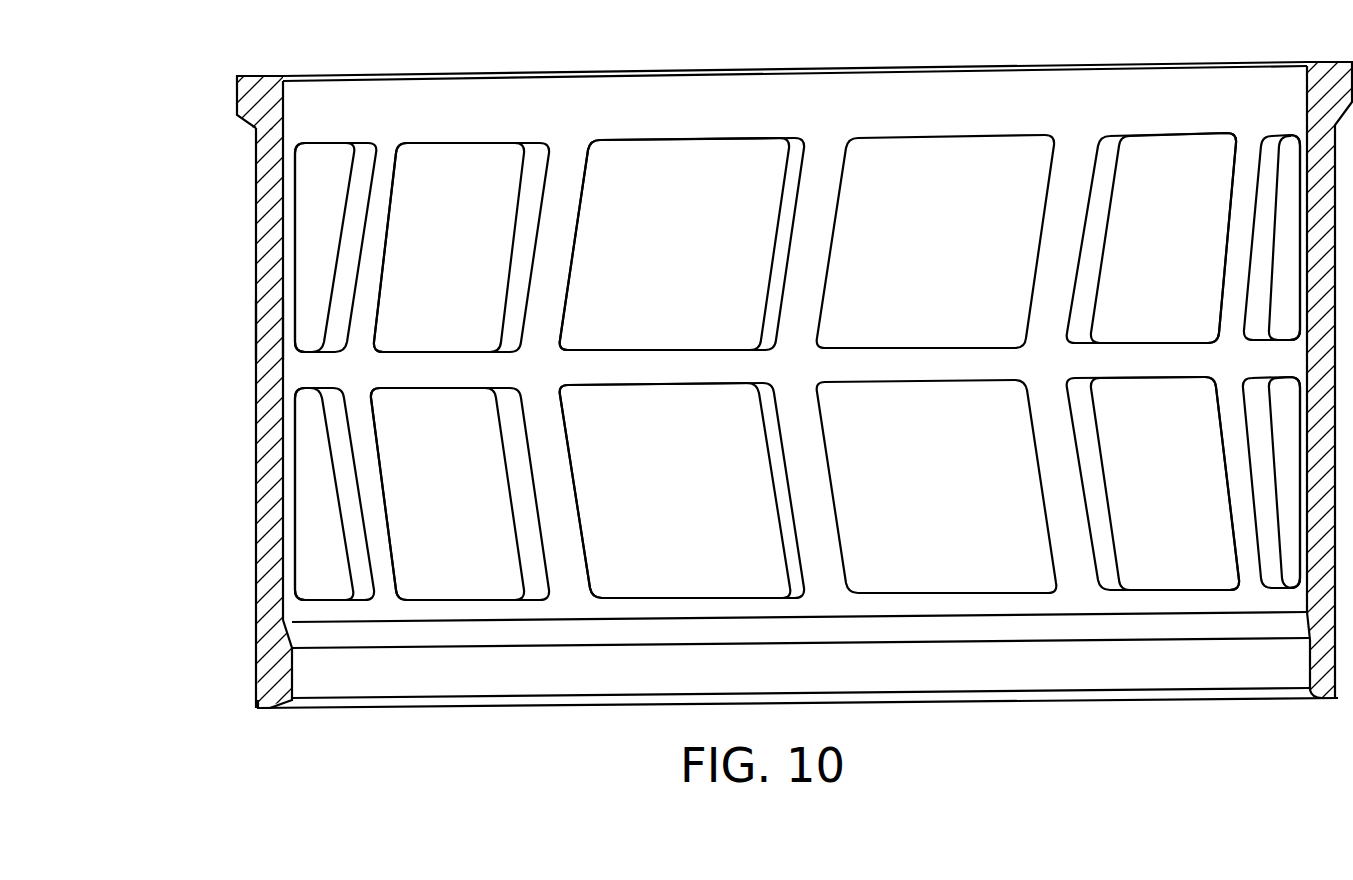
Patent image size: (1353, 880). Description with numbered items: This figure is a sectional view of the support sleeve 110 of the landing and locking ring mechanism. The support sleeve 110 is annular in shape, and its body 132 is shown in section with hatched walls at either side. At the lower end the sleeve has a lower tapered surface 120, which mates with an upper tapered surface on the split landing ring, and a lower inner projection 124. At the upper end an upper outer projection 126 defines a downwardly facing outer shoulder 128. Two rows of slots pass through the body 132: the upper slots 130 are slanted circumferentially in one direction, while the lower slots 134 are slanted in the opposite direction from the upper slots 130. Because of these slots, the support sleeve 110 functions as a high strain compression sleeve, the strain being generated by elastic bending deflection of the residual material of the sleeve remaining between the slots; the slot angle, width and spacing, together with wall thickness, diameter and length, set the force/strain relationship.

The support sleeve 110 is at (694, 417).
The lower tapered surface 120 is at (283, 705).
The lower inner projection 124 is at (293, 670).
The upper outer projection 126 is at (240, 98).
The downwardly facing outer shoulder 128 is at (246, 138).
The upper slots 130 is at (492, 258).
The body 132 is at (258, 327).
The lower slots 134 is at (488, 505).